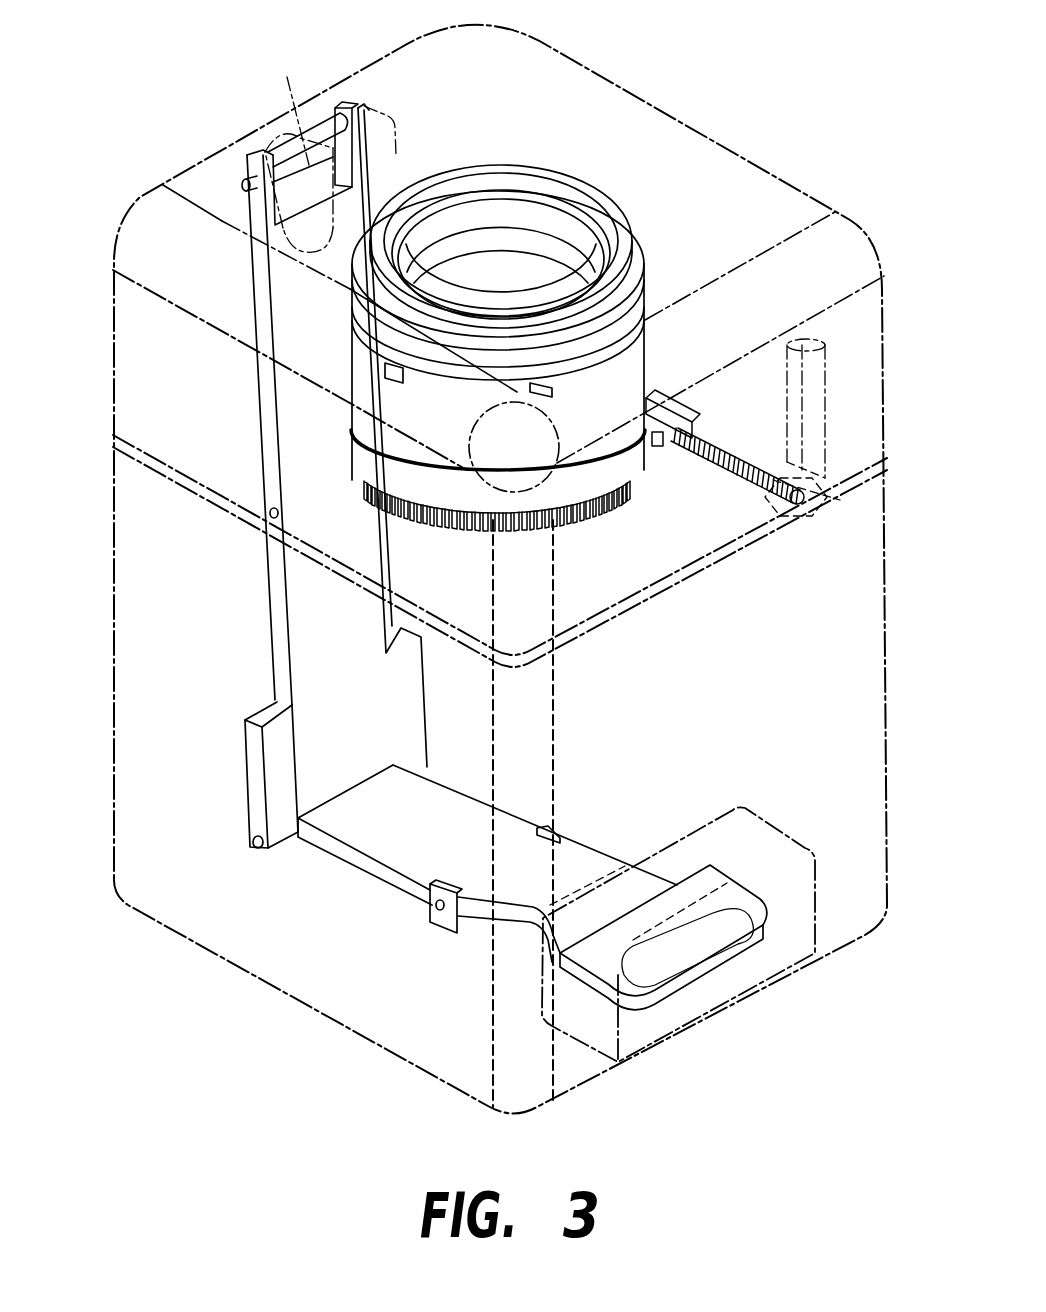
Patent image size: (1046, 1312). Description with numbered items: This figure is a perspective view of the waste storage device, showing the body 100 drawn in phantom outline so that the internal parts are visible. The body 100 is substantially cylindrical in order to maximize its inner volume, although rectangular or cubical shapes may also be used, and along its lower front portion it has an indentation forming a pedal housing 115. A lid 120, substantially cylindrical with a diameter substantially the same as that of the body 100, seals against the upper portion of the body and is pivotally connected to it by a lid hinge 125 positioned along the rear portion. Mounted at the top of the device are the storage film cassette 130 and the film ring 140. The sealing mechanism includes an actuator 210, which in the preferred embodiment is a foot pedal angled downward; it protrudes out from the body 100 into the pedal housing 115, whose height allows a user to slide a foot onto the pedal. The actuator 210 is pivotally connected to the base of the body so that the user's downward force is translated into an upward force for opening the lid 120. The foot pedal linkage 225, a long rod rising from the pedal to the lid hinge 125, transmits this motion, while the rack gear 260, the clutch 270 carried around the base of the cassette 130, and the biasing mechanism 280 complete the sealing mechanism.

The body 100 is at (157, 650).
The pedal housing 115 is at (797, 915).
The lid 120 is at (703, 172).
The lid hinge 125 is at (287, 77).
The storage film cassette 130 is at (653, 346).
The film ring 140 is at (567, 172).
The actuator 210 is at (702, 975).
The foot pedal linkage 225 is at (245, 781).
The rack gear 260 is at (649, 404).
The clutch 270 is at (582, 522).
The biasing mechanism 280 is at (730, 466).